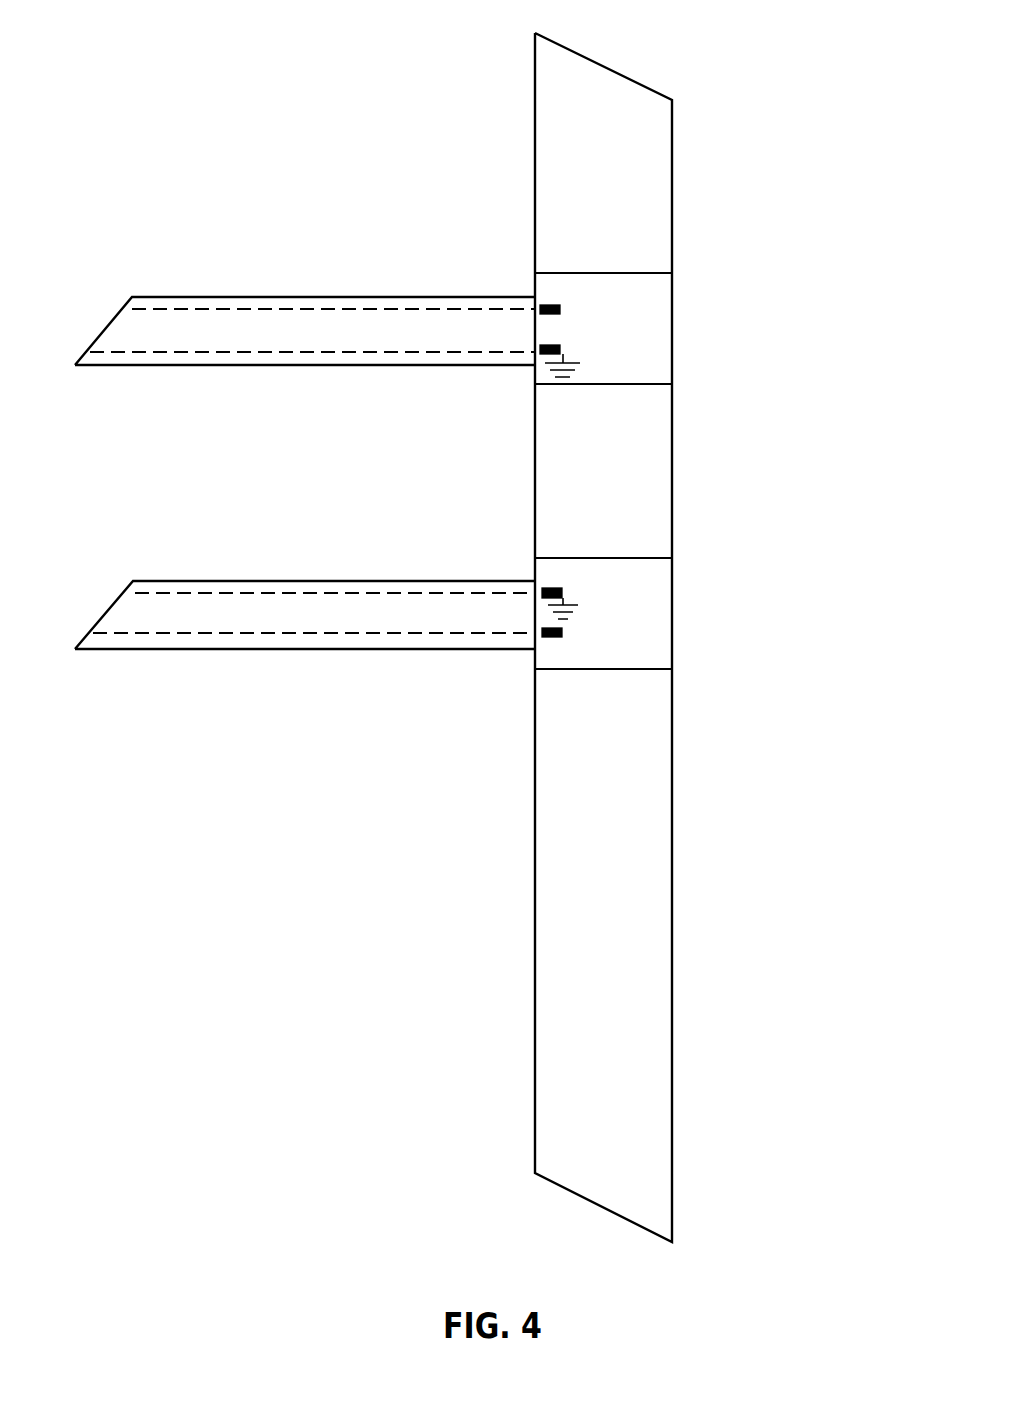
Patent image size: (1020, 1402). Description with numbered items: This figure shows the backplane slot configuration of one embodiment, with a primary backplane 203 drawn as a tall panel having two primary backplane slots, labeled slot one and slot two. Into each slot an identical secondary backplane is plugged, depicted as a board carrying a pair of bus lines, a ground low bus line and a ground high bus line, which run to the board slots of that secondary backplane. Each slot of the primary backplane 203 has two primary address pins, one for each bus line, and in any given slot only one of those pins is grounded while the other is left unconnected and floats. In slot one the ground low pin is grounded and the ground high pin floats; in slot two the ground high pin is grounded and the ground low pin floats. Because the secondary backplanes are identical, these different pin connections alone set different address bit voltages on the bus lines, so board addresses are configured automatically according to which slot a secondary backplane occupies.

The primary backplane 203 is at (617, 73).